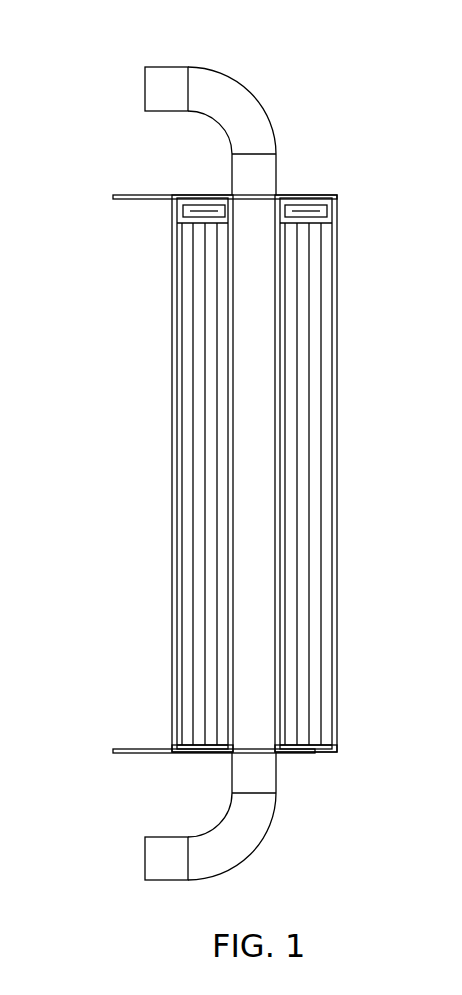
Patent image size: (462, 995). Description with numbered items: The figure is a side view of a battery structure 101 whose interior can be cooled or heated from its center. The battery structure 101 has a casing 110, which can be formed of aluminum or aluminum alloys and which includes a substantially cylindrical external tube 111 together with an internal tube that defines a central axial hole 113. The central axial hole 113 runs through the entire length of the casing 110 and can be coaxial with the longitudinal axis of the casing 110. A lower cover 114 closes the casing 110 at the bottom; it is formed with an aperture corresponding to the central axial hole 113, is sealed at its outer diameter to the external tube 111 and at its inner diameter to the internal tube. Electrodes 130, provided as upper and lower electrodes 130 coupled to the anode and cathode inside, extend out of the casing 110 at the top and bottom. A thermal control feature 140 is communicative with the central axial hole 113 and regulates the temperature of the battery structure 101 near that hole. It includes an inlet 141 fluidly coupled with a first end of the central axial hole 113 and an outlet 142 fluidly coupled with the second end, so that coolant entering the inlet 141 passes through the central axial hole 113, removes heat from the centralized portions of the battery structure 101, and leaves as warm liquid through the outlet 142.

The battery structure 101 is at (269, 473).
The casing 110 is at (169, 473).
The external tube 111 is at (172, 385).
The central axial hole 113 is at (258, 706).
The lower cover 114 is at (337, 748).
The electrodes 130 is at (147, 199).
The thermal control feature 140 is at (268, 208).
The inlet 141 is at (247, 112).
The outlet 142 is at (247, 840).